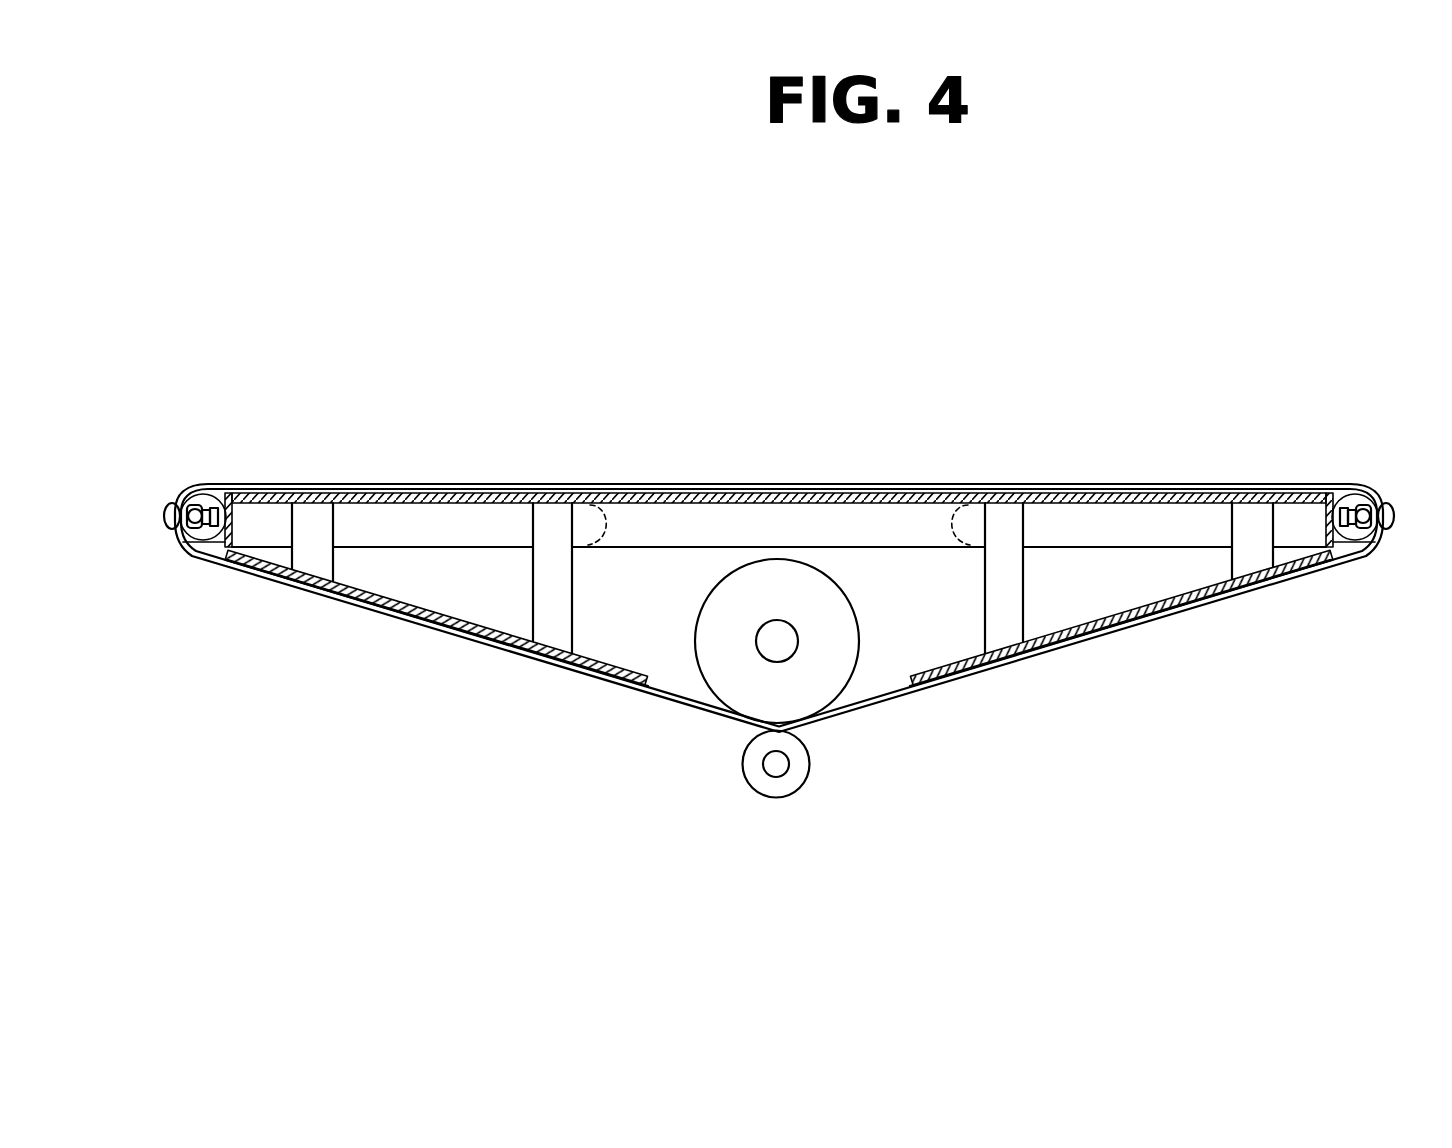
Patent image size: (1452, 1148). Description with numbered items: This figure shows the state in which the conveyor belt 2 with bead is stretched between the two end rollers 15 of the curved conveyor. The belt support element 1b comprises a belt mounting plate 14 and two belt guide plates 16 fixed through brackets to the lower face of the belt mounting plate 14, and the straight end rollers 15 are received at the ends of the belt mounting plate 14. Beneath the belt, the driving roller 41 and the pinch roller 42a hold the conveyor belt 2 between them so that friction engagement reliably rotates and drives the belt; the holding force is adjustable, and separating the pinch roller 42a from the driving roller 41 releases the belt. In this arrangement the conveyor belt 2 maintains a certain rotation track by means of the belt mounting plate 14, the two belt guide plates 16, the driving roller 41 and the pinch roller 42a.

The belt support element 1b is at (371, 331).
The conveyor belt 2 is at (1075, 486).
The belt mounting plate 14 is at (522, 488).
The end roller 15 is at (213, 497).
The belt guide plate 16 is at (403, 488).
The driving roller 41 is at (820, 668).
The pinch roller 42a is at (792, 782).